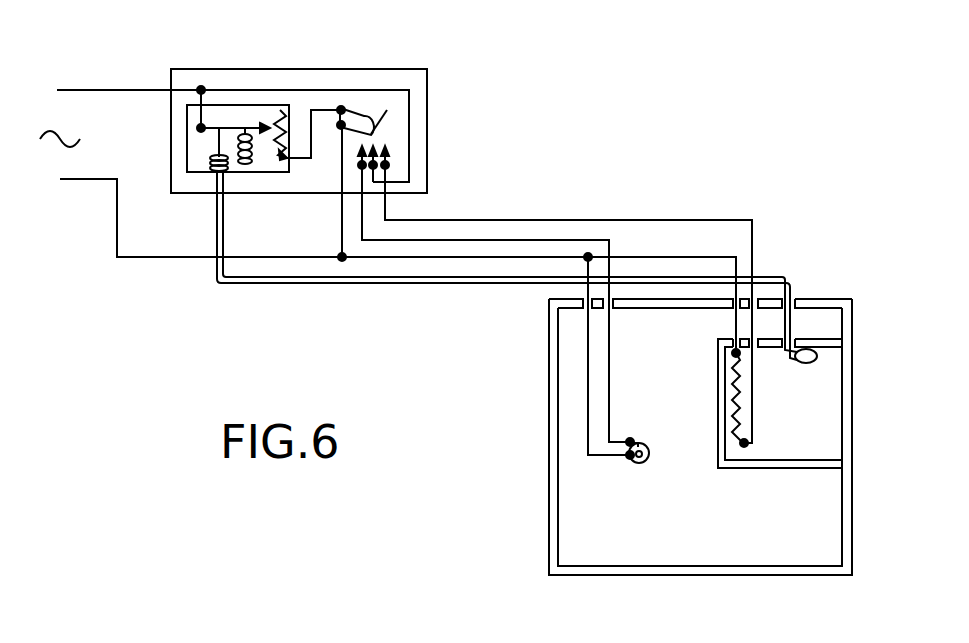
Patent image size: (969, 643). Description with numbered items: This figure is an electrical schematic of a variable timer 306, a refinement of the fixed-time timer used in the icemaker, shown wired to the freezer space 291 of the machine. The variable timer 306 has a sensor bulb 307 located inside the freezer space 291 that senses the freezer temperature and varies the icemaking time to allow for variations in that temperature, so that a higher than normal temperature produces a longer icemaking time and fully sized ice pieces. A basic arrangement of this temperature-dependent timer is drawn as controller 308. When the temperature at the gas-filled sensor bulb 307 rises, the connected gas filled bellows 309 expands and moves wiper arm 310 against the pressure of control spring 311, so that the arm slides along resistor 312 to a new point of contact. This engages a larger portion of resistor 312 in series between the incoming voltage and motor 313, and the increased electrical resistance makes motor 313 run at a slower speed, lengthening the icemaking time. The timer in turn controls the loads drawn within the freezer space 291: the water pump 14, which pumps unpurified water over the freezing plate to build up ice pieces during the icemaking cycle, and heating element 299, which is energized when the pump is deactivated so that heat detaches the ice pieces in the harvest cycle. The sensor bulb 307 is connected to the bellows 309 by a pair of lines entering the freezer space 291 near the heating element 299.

The variable timer 306 is at (432, 87).
The sensor bulb 307 is at (807, 347).
The controller 308 is at (218, 103).
The gas filled bellows 309 is at (210, 177).
The wiper arm 310 is at (247, 122).
The control spring 311 is at (260, 167).
The resistor 312 is at (290, 105).
The motor 313 is at (358, 103).
The freezer space 291 is at (822, 425).
The heating element 299 is at (744, 408).
The water pump 14 is at (647, 462).